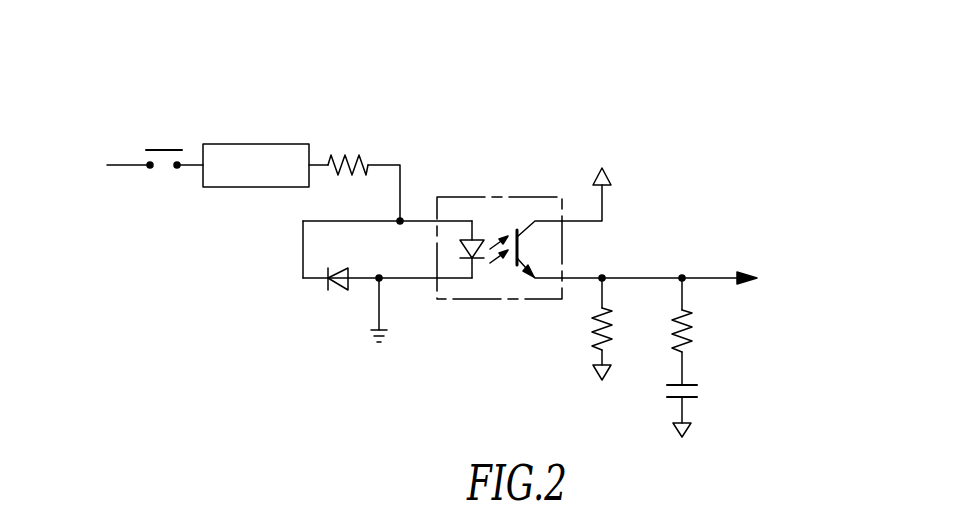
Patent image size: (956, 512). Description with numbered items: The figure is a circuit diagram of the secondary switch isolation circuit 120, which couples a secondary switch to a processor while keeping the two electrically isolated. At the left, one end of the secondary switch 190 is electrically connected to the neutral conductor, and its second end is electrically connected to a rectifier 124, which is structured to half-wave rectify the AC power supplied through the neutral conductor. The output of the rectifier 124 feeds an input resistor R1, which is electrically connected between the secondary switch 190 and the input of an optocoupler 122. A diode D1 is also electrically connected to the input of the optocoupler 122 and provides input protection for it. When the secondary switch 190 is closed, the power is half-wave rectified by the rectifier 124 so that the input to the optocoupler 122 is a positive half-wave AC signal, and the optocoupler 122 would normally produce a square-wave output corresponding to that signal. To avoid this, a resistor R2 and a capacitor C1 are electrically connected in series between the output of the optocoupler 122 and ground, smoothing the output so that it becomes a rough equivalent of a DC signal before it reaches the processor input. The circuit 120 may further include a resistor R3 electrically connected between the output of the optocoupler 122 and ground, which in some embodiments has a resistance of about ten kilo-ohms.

The secondary switch isolation circuit 120 is at (243, 31).
The secondary switch 190 is at (158, 118).
The rectifier 124 is at (270, 144).
The optocoupler 122 is at (520, 197).
The input resistor R1 is at (347, 156).
The diode D1 is at (330, 268).
The resistor R3 is at (592, 322).
The resistor R2 is at (690, 327).
The capacitor C1 is at (697, 395).